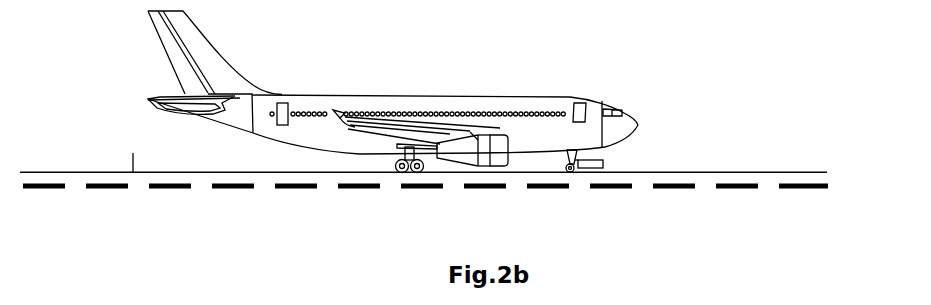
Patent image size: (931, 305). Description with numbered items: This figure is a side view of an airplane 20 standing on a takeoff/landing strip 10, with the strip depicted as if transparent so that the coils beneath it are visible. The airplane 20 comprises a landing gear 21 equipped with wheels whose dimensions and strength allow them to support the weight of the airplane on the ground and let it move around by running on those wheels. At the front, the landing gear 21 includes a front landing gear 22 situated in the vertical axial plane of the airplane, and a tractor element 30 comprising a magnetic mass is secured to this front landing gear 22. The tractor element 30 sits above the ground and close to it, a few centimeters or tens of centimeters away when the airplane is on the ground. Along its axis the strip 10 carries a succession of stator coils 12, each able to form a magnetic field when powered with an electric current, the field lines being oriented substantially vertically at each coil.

The takeoff/landing strip 10 is at (131, 170).
The stator coils 12 is at (222, 190).
The airplane 20 is at (396, 93).
The landing gear 21 is at (391, 168).
The front landing gear 22 is at (562, 171).
The tractor element 30 is at (605, 160).